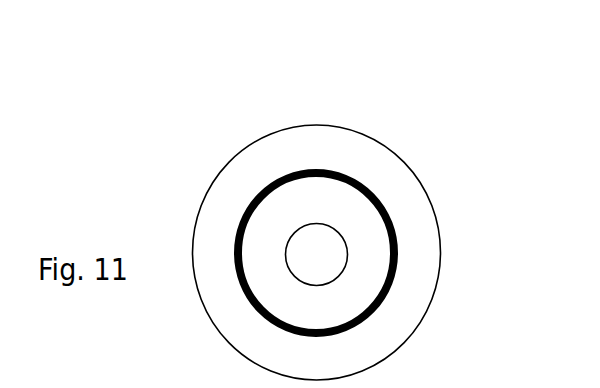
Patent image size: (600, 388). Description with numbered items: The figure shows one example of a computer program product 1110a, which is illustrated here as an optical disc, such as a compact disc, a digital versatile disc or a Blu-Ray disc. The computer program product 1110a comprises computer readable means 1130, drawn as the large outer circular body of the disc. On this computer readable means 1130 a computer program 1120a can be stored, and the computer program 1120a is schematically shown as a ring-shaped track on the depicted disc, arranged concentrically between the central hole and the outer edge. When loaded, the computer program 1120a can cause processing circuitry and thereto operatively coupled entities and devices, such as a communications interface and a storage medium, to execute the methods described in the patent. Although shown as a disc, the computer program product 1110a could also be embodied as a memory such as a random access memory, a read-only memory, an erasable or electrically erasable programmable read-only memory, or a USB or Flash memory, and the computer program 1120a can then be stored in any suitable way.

The computer program product 1110a is at (467, 165).
The computer program 1120a is at (396, 267).
The computer readable means 1130 is at (360, 356).